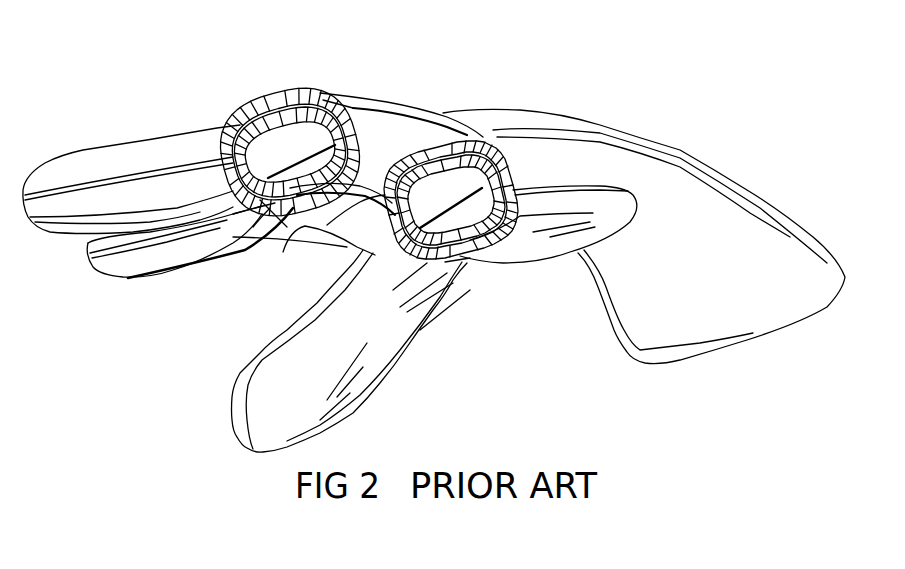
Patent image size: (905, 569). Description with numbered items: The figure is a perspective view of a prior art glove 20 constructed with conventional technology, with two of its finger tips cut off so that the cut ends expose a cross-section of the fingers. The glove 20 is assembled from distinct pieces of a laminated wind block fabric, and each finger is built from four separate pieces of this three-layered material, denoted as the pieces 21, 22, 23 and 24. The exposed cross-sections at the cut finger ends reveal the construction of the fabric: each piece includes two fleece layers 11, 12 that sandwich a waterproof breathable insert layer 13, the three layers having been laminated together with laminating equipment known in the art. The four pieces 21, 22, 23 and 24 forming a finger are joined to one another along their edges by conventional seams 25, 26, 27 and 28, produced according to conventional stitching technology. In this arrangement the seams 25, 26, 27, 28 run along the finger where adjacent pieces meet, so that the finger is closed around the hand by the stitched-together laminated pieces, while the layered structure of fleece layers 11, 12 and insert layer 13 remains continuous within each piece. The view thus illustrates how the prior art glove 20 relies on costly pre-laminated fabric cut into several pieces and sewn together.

The glove 20 is at (490, 94).
The piece of laminated material 21 is at (293, 90).
The seam 27 is at (240, 118).
The seam 26 is at (323, 98).
The piece of laminated material 22 is at (393, 113).
The piece of laminated material 24 is at (225, 152).
The piece of laminated material 23 is at (250, 213).
The seam 28 is at (213, 258).
The seam 25 is at (330, 226).
The fleece layer 11 is at (257, 217).
The fleece layer 12 is at (268, 213).
The waterproof breathable insert layer 13 is at (272, 200).